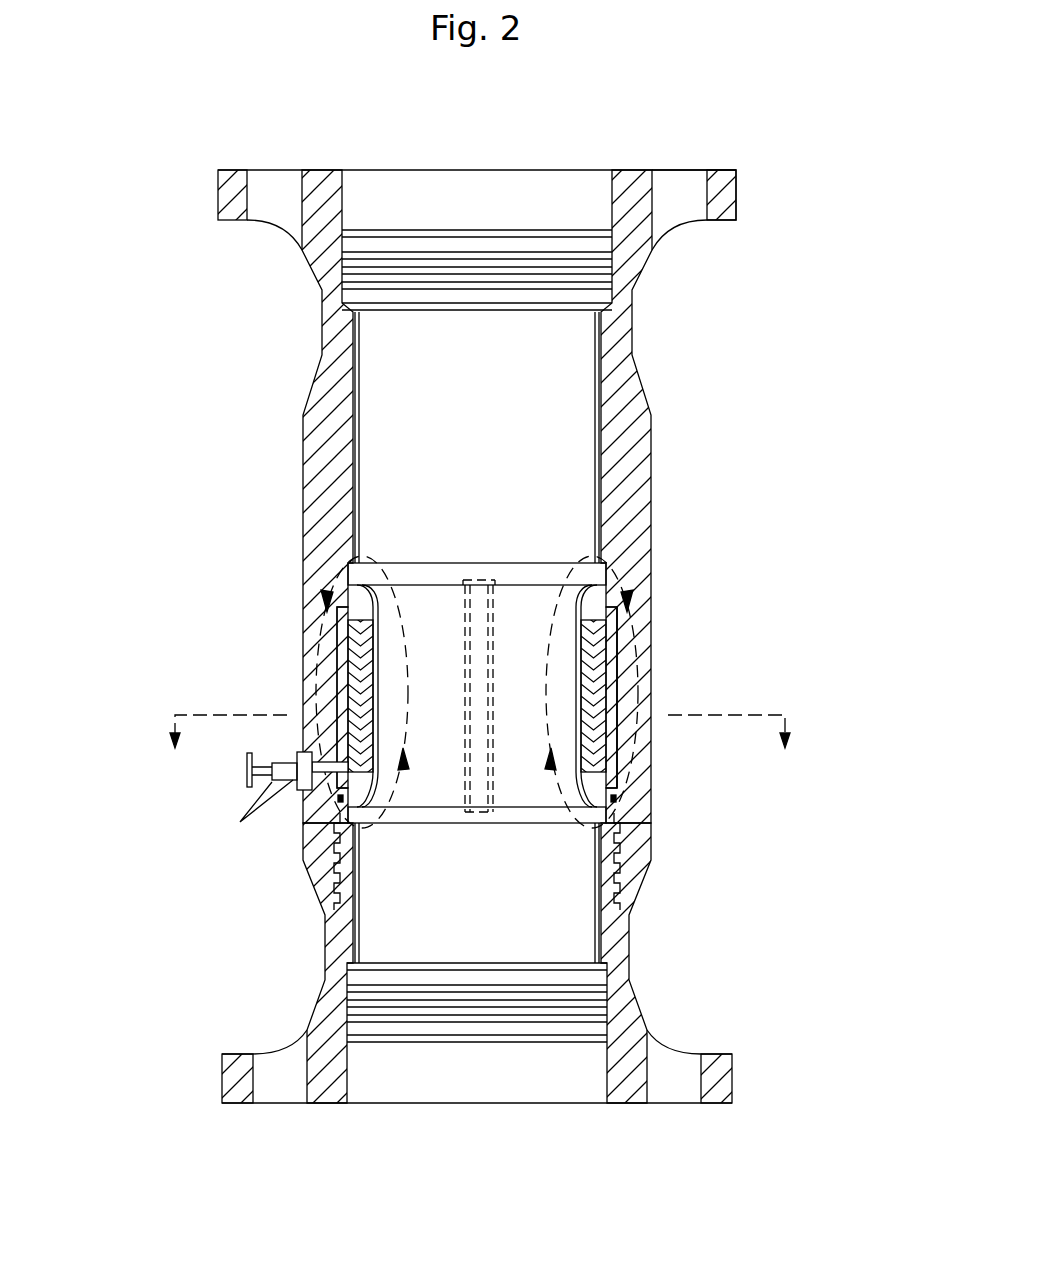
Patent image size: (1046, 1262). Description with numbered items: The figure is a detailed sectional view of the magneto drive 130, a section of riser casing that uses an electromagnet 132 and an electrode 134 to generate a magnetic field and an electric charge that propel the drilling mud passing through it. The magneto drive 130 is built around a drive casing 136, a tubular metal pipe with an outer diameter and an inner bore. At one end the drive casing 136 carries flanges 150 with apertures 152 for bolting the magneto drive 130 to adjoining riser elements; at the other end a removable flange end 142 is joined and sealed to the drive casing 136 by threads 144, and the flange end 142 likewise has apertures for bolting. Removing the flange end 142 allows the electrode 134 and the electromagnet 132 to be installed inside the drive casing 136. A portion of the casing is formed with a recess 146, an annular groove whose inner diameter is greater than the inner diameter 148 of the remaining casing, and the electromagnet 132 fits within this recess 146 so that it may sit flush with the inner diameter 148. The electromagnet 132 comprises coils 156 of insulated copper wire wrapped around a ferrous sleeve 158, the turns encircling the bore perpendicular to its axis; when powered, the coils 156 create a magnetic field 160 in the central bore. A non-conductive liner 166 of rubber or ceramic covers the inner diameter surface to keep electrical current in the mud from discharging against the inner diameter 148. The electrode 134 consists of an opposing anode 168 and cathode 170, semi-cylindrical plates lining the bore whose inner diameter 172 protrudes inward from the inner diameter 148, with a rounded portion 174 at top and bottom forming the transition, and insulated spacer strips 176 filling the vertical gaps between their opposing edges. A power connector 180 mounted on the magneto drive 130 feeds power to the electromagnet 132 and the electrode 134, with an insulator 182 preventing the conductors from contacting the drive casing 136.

The magneto drive 130 is at (163, 215).
The electromagnet 132 is at (285, 606).
The electrode 134 is at (414, 572).
The drive casing 136 is at (300, 331).
The flange end 142 is at (633, 962).
The threads 144 is at (628, 867).
The recess 146 is at (347, 654).
The inner diameter 148 is at (374, 453).
The flanges 150 is at (735, 188).
The apertures 152 is at (678, 185).
The coils 156 is at (588, 735).
The sleeve 158 is at (610, 652).
The magnetic field 160 is at (410, 682).
The liner 166 is at (372, 375).
The anode 168 is at (413, 793).
The cathode 170 is at (541, 792).
The inner diameter of electrodes 172 is at (565, 677).
The rounded portion 174 is at (607, 781).
The insulated spacer strip 176 is at (478, 583).
The power connector 180 is at (287, 760).
The insulator 182 is at (312, 800).